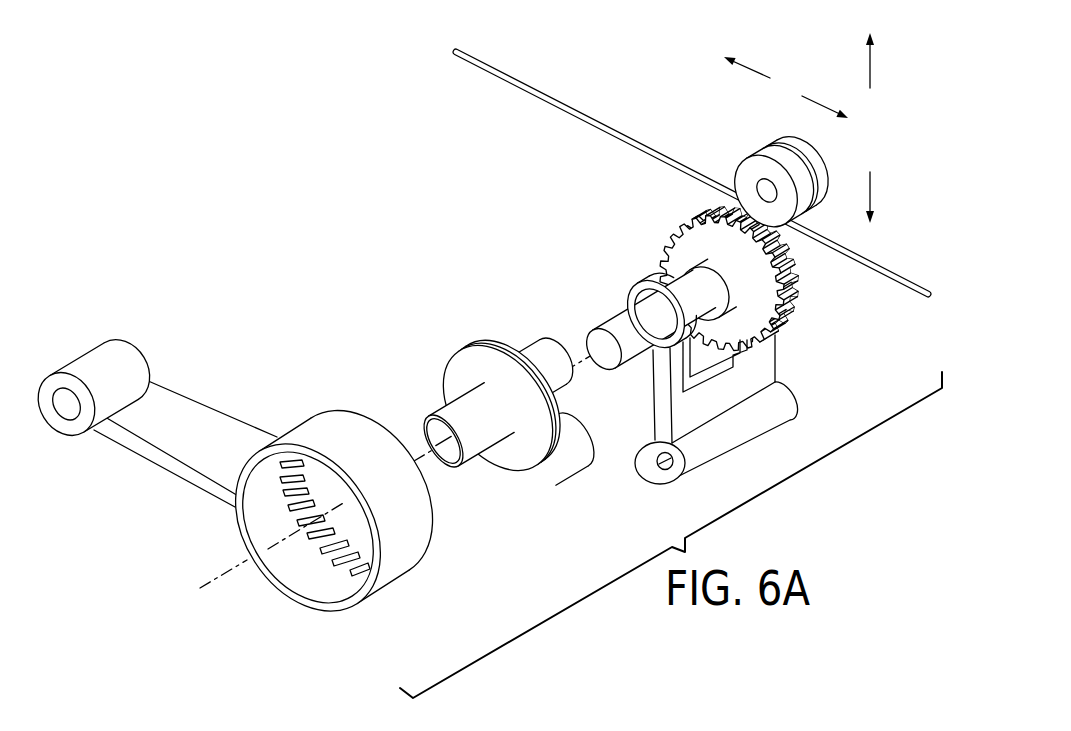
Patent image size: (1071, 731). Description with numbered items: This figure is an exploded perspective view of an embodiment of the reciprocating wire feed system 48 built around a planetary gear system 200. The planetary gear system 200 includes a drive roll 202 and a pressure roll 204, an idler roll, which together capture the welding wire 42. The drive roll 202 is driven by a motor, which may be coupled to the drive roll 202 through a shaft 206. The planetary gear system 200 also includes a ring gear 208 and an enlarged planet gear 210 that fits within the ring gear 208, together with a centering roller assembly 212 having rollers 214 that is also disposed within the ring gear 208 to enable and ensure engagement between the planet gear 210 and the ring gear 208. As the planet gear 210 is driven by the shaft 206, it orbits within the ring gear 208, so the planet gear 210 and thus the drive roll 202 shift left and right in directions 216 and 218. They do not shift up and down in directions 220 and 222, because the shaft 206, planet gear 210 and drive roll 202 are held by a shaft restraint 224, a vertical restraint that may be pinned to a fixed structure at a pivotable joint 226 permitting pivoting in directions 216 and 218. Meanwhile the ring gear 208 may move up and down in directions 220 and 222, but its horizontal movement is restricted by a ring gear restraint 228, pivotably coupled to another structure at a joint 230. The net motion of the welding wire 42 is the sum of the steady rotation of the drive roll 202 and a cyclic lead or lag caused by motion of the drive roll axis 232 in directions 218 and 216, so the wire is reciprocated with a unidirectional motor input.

The welding wire 42 is at (876, 258).
The reciprocating wire feed system 48 is at (213, 262).
The planetary gear system 200 is at (357, 90).
The drive roll 202 is at (805, 254).
The pressure roll 204 is at (750, 172).
The shaft 206 is at (467, 415).
The ring gear 208 is at (289, 428).
The planet gear 210 is at (466, 368).
The centering roller assembly 212 is at (505, 423).
The rollers 214 is at (543, 338).
The direction 216 is at (815, 100).
The direction 218 is at (748, 68).
The direction 220 is at (870, 67).
The direction 222 is at (870, 190).
The shaft restraint 224 is at (729, 397).
The joint 226 is at (661, 461).
The ring gear restraint 228 is at (152, 427).
The joint 230 is at (67, 411).
The drive roll axis 232 is at (213, 578).